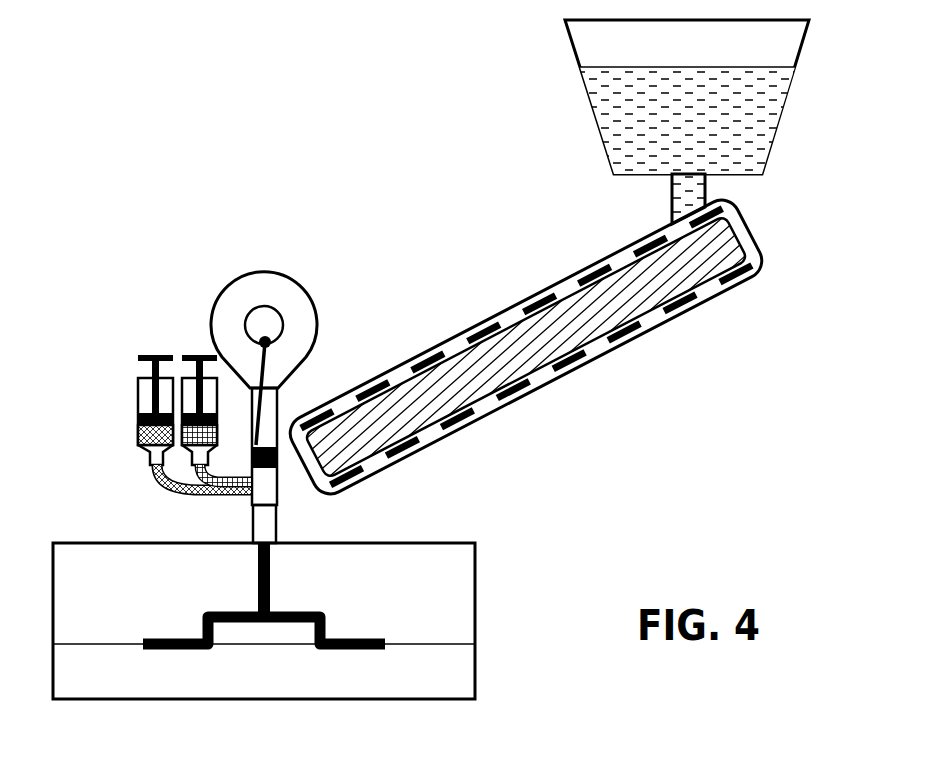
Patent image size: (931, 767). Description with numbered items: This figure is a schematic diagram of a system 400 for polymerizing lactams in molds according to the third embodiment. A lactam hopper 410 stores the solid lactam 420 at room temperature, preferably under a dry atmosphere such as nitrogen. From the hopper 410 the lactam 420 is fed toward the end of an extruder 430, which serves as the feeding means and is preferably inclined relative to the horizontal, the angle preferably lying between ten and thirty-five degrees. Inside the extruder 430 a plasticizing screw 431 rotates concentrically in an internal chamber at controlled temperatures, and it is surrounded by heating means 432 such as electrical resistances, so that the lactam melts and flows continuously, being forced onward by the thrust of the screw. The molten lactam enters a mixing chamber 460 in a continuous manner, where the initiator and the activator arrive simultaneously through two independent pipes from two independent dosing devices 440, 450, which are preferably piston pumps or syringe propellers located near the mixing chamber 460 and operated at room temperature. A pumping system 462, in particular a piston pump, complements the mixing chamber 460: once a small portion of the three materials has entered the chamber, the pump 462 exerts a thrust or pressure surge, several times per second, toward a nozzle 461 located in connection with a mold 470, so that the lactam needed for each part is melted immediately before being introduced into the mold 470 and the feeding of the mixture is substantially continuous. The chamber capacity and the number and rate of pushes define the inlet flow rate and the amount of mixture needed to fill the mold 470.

The system 400 is at (500, 444).
The lactam hopper 410 is at (619, 43).
The solid lactam 420 is at (622, 122).
The extruder 430 is at (526, 347).
The plasticizing screw 431 is at (492, 315).
The heating means 432 is at (526, 347).
The dosing device 440 is at (148, 408).
The dosing device 450 is at (185, 387).
The mixing chamber 460 is at (260, 494).
The nozzle 461 is at (268, 530).
The pumping system 462 is at (269, 286).
The mold 470 is at (422, 610).